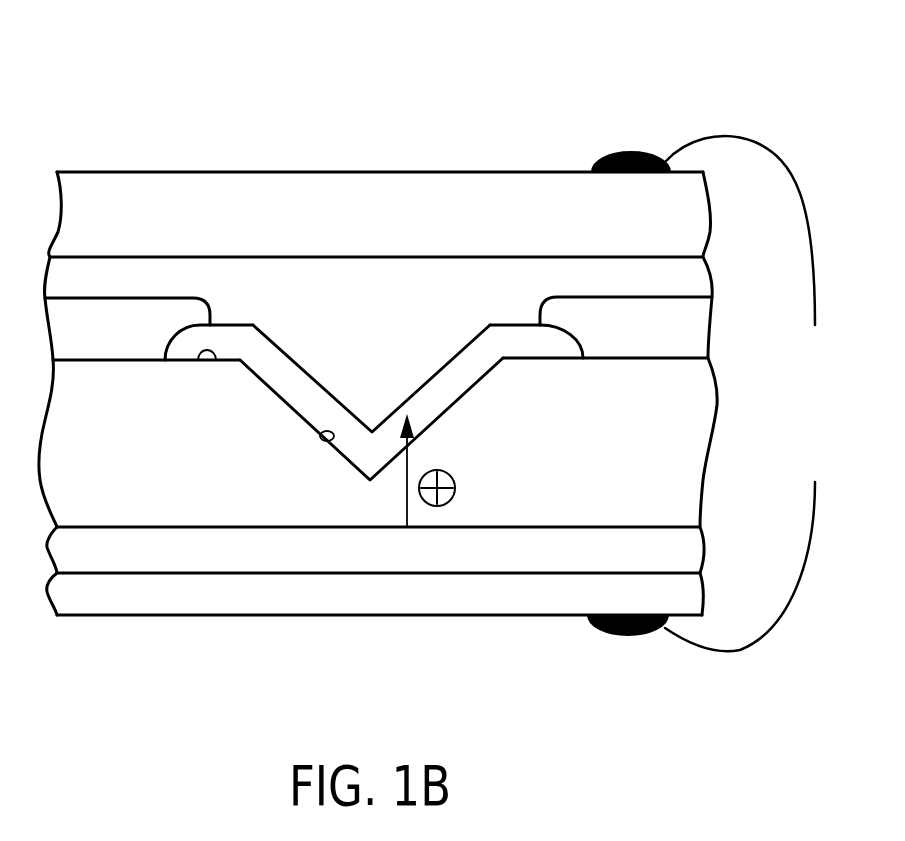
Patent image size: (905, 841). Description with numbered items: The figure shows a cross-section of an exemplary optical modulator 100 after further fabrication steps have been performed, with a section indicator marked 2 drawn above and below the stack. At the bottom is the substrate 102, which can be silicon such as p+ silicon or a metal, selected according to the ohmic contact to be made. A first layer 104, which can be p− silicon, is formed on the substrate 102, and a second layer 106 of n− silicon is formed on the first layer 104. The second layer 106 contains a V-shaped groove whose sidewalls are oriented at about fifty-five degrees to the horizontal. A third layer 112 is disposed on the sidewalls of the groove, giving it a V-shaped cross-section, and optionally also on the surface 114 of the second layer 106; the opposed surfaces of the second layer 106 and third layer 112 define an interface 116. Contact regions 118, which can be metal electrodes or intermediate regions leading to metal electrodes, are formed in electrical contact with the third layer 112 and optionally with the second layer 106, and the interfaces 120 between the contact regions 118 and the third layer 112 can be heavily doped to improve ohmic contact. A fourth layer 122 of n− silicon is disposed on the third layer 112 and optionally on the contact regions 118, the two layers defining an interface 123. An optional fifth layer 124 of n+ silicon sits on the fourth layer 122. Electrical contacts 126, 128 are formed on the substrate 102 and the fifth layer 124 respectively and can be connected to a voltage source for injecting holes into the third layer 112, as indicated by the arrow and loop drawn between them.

The optical modulator 100 is at (267, 104).
The section line 2 is at (478, 160).
The substrate 102 is at (690, 591).
The first layer 104 is at (690, 547).
The second layer 106 is at (690, 440).
The third layer 112 is at (295, 393).
The surface 114 is at (198, 360).
The interface 116 is at (325, 436).
The contact regions 118 is at (137, 298).
The interfaces 120 is at (233, 324).
The fourth layer 122 is at (695, 276).
The interface 123 is at (335, 397).
The fifth layer 124 is at (695, 213).
The electrical contact 126 is at (630, 633).
The electrical contact 128 is at (632, 152).